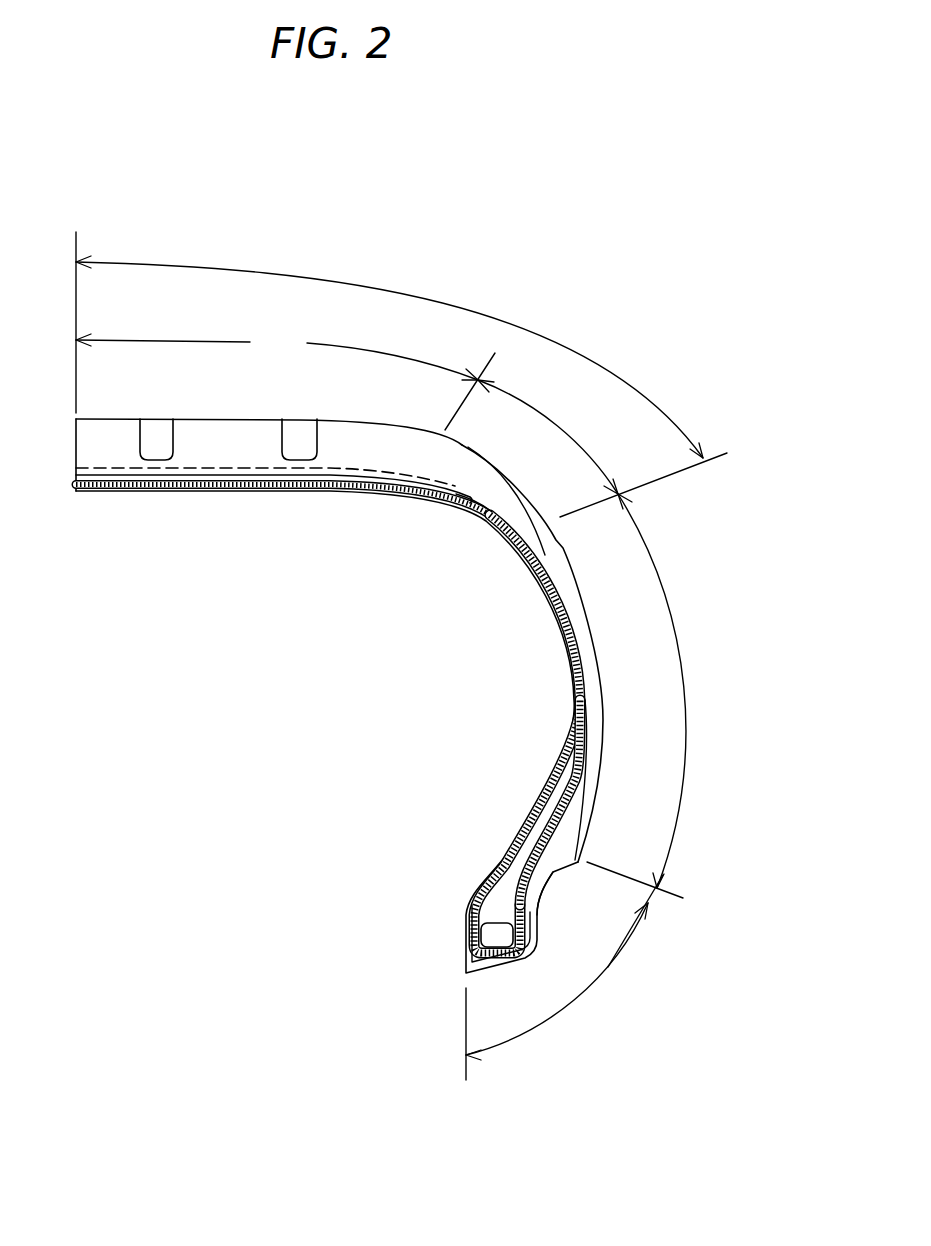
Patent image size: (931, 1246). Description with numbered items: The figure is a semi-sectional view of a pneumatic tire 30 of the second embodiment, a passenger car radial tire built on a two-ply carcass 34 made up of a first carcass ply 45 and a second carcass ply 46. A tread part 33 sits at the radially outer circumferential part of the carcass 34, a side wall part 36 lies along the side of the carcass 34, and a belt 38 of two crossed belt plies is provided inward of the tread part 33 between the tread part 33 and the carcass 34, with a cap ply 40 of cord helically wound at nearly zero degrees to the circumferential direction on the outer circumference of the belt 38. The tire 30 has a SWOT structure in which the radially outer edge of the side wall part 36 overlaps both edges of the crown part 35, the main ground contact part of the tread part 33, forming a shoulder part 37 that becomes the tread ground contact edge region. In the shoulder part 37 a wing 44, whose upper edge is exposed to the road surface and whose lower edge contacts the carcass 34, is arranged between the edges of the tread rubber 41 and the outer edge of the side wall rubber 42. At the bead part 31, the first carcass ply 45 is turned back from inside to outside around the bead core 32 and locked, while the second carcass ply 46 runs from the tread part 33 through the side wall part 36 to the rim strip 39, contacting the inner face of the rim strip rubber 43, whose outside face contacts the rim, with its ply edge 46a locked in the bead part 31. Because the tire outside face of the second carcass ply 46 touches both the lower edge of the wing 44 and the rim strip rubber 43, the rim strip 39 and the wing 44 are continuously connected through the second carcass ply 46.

The pneumatic tire 30 is at (618, 180).
The bead part 31 is at (557, 991).
The bead core 32 is at (495, 937).
The tread part 33 is at (389, 345).
The carcass 34 is at (570, 630).
The crown part 35 is at (277, 352).
The side wall part 36 is at (661, 730).
The shoulder part 37 is at (586, 435).
The belt 38 is at (247, 476).
The rim strip 39 is at (545, 908).
The cap ply 40 is at (357, 466).
The tread rubber 41 is at (215, 437).
The side wall rubber 42 is at (578, 600).
The rim strip rubber 43 is at (548, 873).
The wing 44 is at (508, 502).
The carcass ply 45 is at (577, 693).
The second carcass ply 46 is at (587, 655).
The ply edge 46a is at (530, 938).